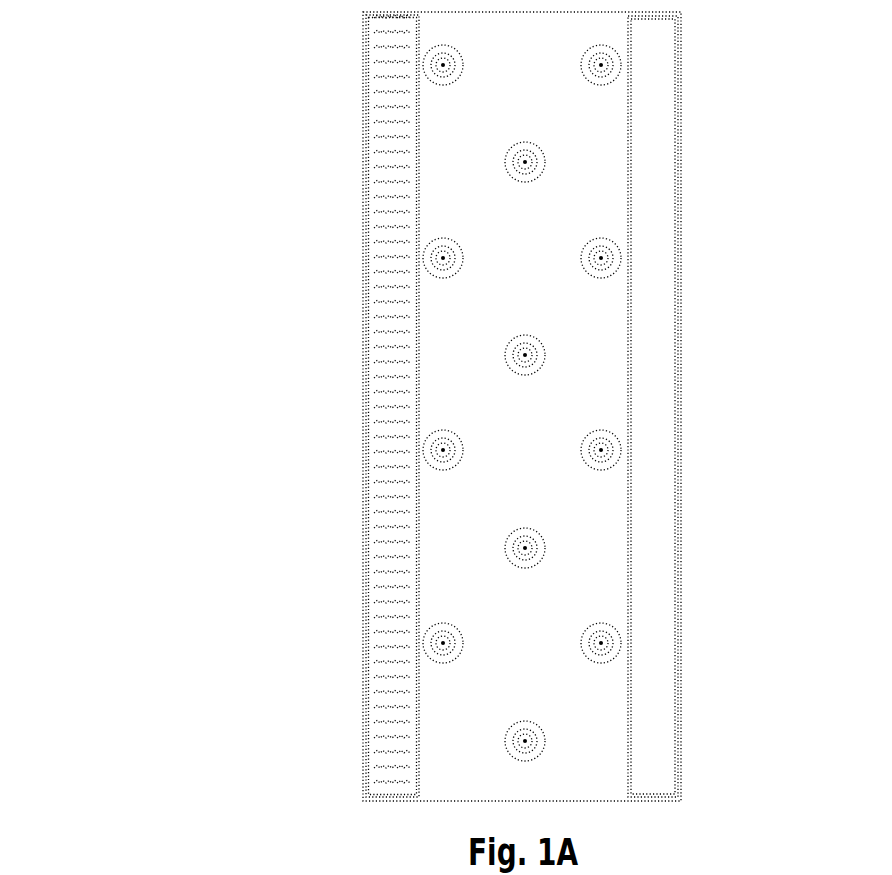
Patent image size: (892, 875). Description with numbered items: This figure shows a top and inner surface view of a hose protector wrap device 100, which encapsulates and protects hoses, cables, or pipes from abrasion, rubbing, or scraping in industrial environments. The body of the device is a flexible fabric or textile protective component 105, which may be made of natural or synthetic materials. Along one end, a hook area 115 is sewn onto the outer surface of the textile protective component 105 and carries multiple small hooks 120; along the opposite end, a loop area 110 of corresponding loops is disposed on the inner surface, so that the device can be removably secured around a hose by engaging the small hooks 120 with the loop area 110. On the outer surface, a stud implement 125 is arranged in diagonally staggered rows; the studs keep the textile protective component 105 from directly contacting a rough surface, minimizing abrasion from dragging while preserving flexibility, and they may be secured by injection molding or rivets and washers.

The hose protector wrap device 100 is at (112, 266).
The textile protective component 105 is at (441, 24).
The loop area 110 is at (653, 34).
The hook area 115 is at (394, 146).
The small hooks 120 is at (375, 231).
The stud implement 125 is at (601, 258).